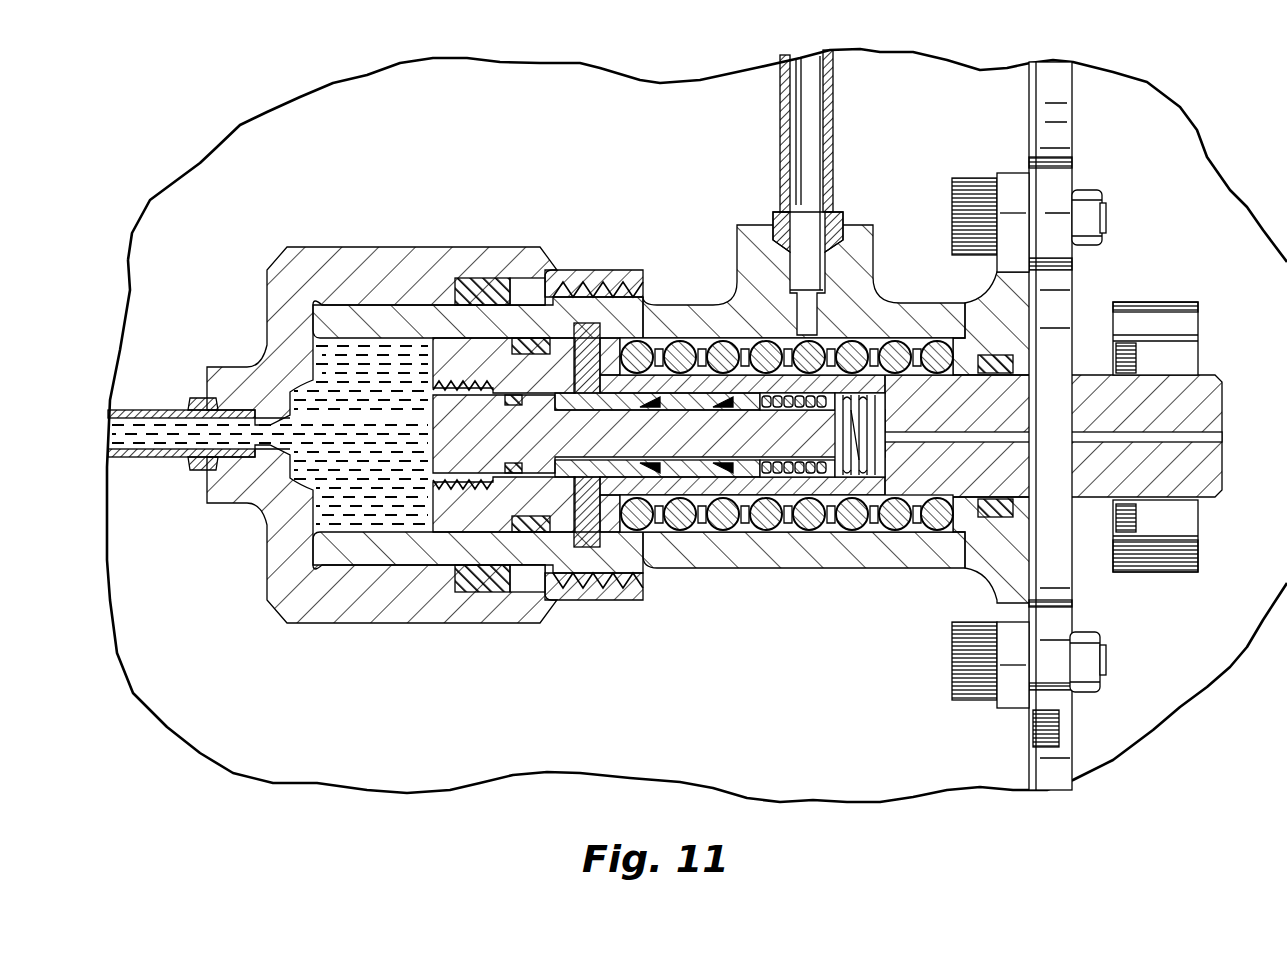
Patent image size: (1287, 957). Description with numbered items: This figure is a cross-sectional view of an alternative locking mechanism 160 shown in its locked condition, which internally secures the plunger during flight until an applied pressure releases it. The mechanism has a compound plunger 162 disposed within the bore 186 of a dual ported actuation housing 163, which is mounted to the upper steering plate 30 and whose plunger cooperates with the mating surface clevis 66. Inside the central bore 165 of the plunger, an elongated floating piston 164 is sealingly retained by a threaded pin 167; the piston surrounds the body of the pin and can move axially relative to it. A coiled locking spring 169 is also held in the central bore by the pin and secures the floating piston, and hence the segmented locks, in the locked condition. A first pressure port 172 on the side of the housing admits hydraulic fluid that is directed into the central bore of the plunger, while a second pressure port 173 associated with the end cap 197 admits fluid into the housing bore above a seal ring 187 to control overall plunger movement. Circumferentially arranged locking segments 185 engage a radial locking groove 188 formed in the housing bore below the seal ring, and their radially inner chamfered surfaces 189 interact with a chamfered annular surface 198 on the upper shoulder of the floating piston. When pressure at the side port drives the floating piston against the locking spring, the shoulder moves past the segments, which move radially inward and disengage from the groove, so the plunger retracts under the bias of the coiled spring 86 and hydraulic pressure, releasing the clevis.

The upper steering plate 30 is at (1065, 104).
The mating surface clevis 66 is at (1178, 310).
The coiled spring 86 is at (766, 500).
The locking mechanism 160 is at (770, 664).
The compound plunger 162 is at (927, 485).
The dual ported actuation housing 163 is at (978, 555).
The floating piston 164 is at (700, 472).
The central bore 165 is at (740, 467).
The threaded pin 167 is at (437, 472).
The coiled locking spring 169 is at (860, 472).
The first pressure port 172 is at (833, 230).
The second pressure port 173 is at (200, 468).
The locking segments 185 is at (588, 324).
The bore 186 is at (708, 342).
The seal ring 187 is at (525, 604).
The radial locking groove 188 is at (615, 340).
The radially inner chamfered surfaces 189 is at (636, 304).
The end cap 197 is at (283, 285).
The chamfered annular surface 198 is at (552, 400).